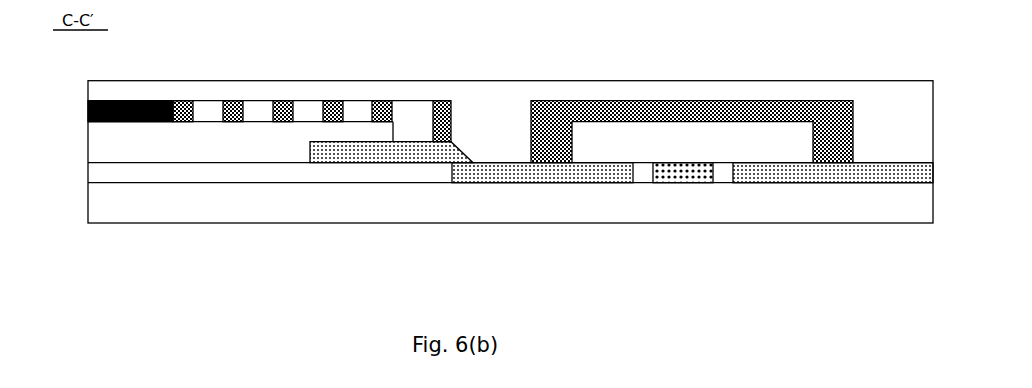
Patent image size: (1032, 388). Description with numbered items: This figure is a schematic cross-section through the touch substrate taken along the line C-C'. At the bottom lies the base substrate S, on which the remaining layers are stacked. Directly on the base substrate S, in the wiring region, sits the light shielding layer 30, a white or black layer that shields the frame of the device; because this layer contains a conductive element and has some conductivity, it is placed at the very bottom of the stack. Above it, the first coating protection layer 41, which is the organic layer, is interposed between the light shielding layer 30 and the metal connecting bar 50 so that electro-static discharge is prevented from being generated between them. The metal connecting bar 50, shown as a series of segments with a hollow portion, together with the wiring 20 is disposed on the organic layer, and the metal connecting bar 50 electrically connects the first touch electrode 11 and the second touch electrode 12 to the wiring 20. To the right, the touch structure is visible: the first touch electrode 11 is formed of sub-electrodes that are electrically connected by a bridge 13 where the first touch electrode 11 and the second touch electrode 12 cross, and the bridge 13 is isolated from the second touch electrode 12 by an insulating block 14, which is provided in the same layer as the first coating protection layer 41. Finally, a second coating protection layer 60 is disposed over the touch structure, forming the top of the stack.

The second coating protection layer 60 is at (108, 87).
The wiring 20 is at (108, 111).
The metal connecting bar 50 is at (290, 101).
The first coating protection layer 41 is at (108, 141).
The light shielding layer 30 is at (108, 171).
The base substrate S is at (103, 204).
The first touch electrode 11 is at (692, 222).
The second touch electrode 12 is at (690, 173).
The bridge 13 is at (854, 101).
The insulating block 14 is at (713, 142).